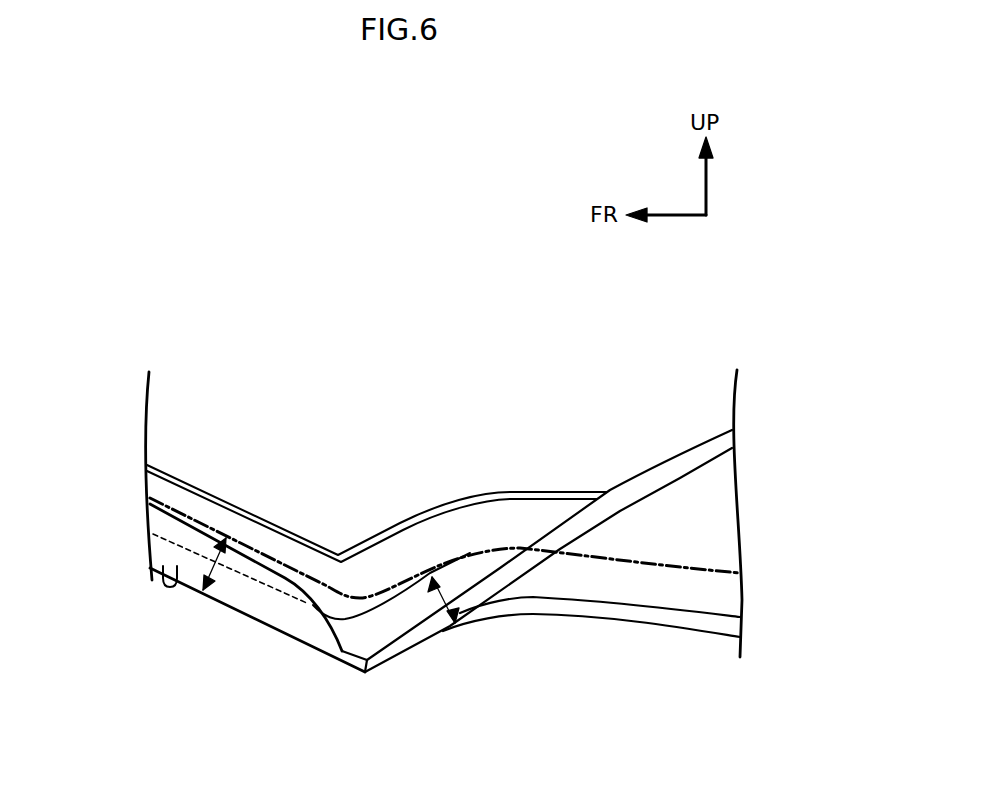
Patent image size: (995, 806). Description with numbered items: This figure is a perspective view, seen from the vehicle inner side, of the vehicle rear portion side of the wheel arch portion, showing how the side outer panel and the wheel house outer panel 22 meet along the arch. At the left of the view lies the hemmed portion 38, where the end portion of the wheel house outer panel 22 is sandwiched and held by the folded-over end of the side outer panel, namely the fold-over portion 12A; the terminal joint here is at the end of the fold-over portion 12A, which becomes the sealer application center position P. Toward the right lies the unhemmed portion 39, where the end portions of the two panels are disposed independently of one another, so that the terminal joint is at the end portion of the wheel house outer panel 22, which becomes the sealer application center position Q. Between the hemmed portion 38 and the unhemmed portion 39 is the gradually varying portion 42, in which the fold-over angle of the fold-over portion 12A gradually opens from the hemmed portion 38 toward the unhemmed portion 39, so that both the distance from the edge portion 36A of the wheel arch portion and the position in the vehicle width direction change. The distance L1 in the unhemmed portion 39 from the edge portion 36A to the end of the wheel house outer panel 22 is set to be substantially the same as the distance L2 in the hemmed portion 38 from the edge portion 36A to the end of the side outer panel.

The wheel house outer panel 22 is at (158, 403).
The edge portion of the wheel arch portion 36A is at (180, 570).
The sealer application center position P is at (227, 518).
The gradually varying portion 42 is at (333, 560).
The fold-over portion 12A is at (278, 622).
The hemmed portion 38 is at (150, 602).
The unhemmed portion 39 is at (456, 641).
The distance L1 is at (432, 600).
The distance L2 is at (230, 565).
The sealer application center position Q is at (392, 592).